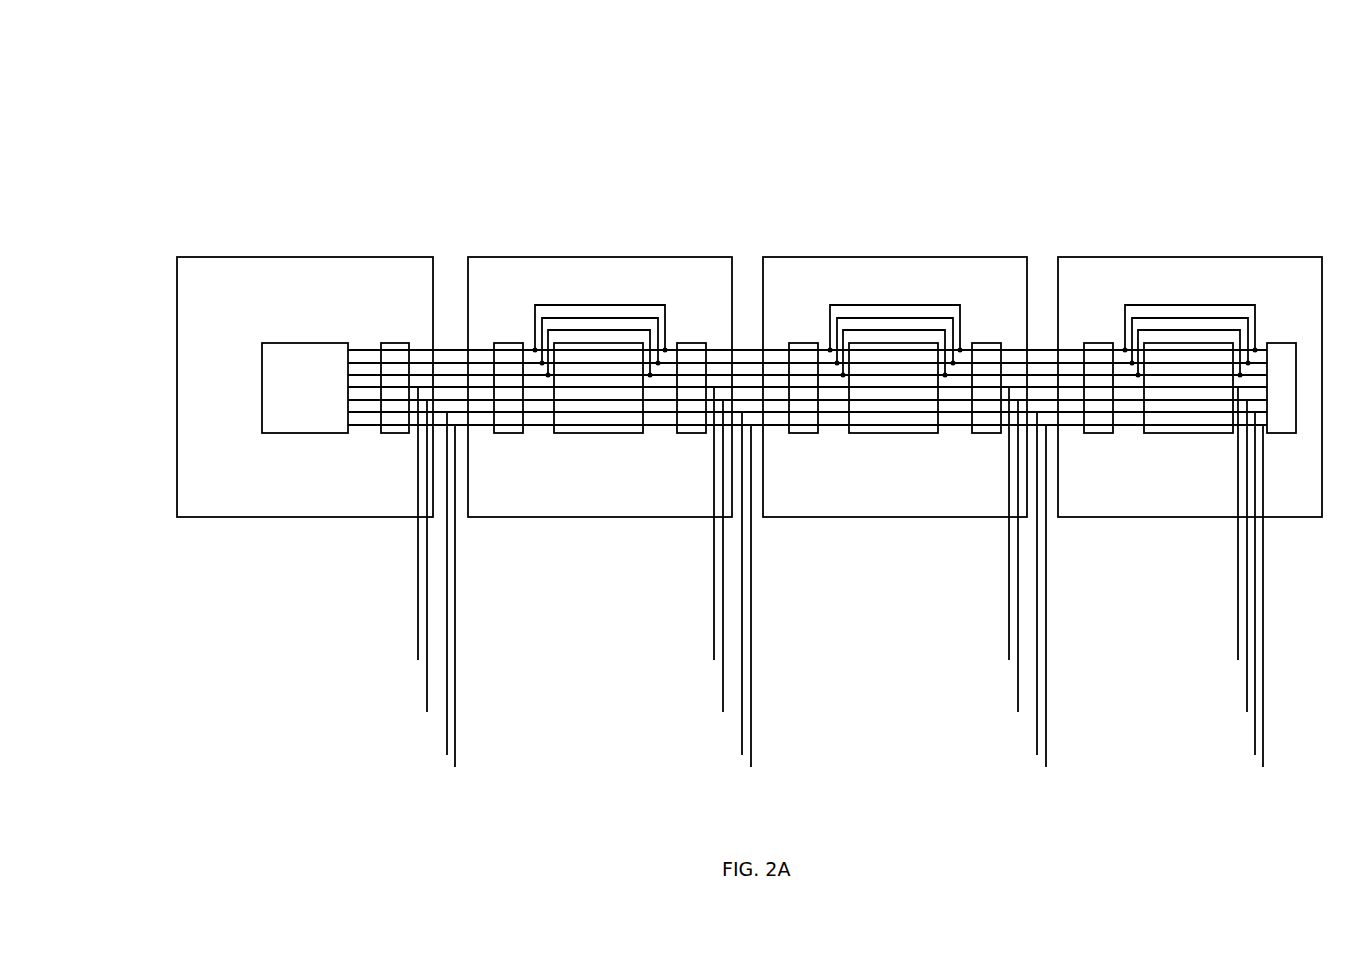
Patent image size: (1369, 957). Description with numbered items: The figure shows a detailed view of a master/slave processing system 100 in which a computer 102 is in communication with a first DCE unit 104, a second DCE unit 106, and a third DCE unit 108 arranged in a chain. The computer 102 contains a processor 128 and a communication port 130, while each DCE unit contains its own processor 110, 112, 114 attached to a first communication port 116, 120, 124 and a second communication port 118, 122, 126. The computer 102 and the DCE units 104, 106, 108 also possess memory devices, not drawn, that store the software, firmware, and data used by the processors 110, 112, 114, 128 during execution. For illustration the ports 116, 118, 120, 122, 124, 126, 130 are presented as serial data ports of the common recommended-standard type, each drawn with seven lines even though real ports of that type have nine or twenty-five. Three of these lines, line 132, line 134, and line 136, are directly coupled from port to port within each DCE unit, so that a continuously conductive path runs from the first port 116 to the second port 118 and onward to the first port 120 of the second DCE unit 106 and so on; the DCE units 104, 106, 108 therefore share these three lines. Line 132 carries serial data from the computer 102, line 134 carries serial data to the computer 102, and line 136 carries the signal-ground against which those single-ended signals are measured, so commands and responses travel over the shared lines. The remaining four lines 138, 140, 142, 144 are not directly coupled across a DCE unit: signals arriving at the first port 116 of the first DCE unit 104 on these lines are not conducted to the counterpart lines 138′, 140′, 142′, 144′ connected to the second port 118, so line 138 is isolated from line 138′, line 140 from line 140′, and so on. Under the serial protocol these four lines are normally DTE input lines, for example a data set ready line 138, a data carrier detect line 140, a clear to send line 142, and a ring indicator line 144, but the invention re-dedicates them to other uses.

The system 100 is at (212, 785).
The computer 102 is at (305, 257).
The first DCE unit 104 is at (600, 257).
The second DCE unit 106 is at (895, 257).
The third DCE unit 108 is at (1190, 257).
The processor 110 is at (618, 417).
The processor 112 is at (913, 417).
The processor 114 is at (1208, 417).
The first communication port 116 is at (508, 343).
The second communication port 118 is at (692, 343).
The first communication port 120 is at (803, 343).
The second communication port 122 is at (987, 343).
The first communication port 124 is at (1098, 343).
The second communication port 126 is at (1282, 343).
The processor 128 is at (305, 433).
The communication port 130 is at (395, 343).
The line 132 is at (444, 350).
The line 134 is at (461, 363).
The line 136 is at (453, 375).
The line 138 is at (418, 660).
The line 140 is at (427, 712).
The line 142 is at (447, 755).
The line 144 is at (455, 767).
The line 138′ is at (714, 660).
The line 140′ is at (723, 712).
The line 142′ is at (742, 755).
The line 144′ is at (751, 767).